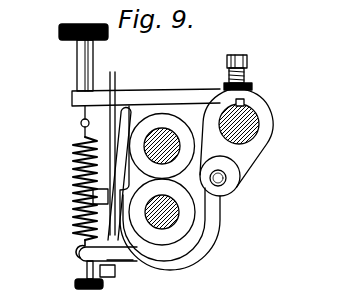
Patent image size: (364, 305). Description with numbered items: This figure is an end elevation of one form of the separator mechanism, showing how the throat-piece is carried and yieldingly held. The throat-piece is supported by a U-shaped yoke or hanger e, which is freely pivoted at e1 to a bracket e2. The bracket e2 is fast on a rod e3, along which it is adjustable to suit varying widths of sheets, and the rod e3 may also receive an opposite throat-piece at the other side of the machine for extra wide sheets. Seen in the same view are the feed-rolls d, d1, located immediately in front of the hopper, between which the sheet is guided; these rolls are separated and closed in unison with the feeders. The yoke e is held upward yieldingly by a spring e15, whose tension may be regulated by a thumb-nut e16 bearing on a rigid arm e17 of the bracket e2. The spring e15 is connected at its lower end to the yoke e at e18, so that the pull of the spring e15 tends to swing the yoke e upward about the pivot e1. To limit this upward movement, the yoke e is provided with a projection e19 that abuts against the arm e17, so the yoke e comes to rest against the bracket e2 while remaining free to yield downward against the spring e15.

The yoke e is at (180, 264).
The pivot e1 is at (223, 183).
The bracket e2 is at (264, 142).
The rod e3 is at (254, 115).
The feed-roll d is at (185, 120).
The feed-roll d1 is at (175, 225).
The spring e15 is at (100, 180).
The thumb-nut e16 is at (80, 69).
The rigid arm e17 is at (144, 91).
The spring connection e18 is at (82, 257).
The projection e19 is at (127, 122).